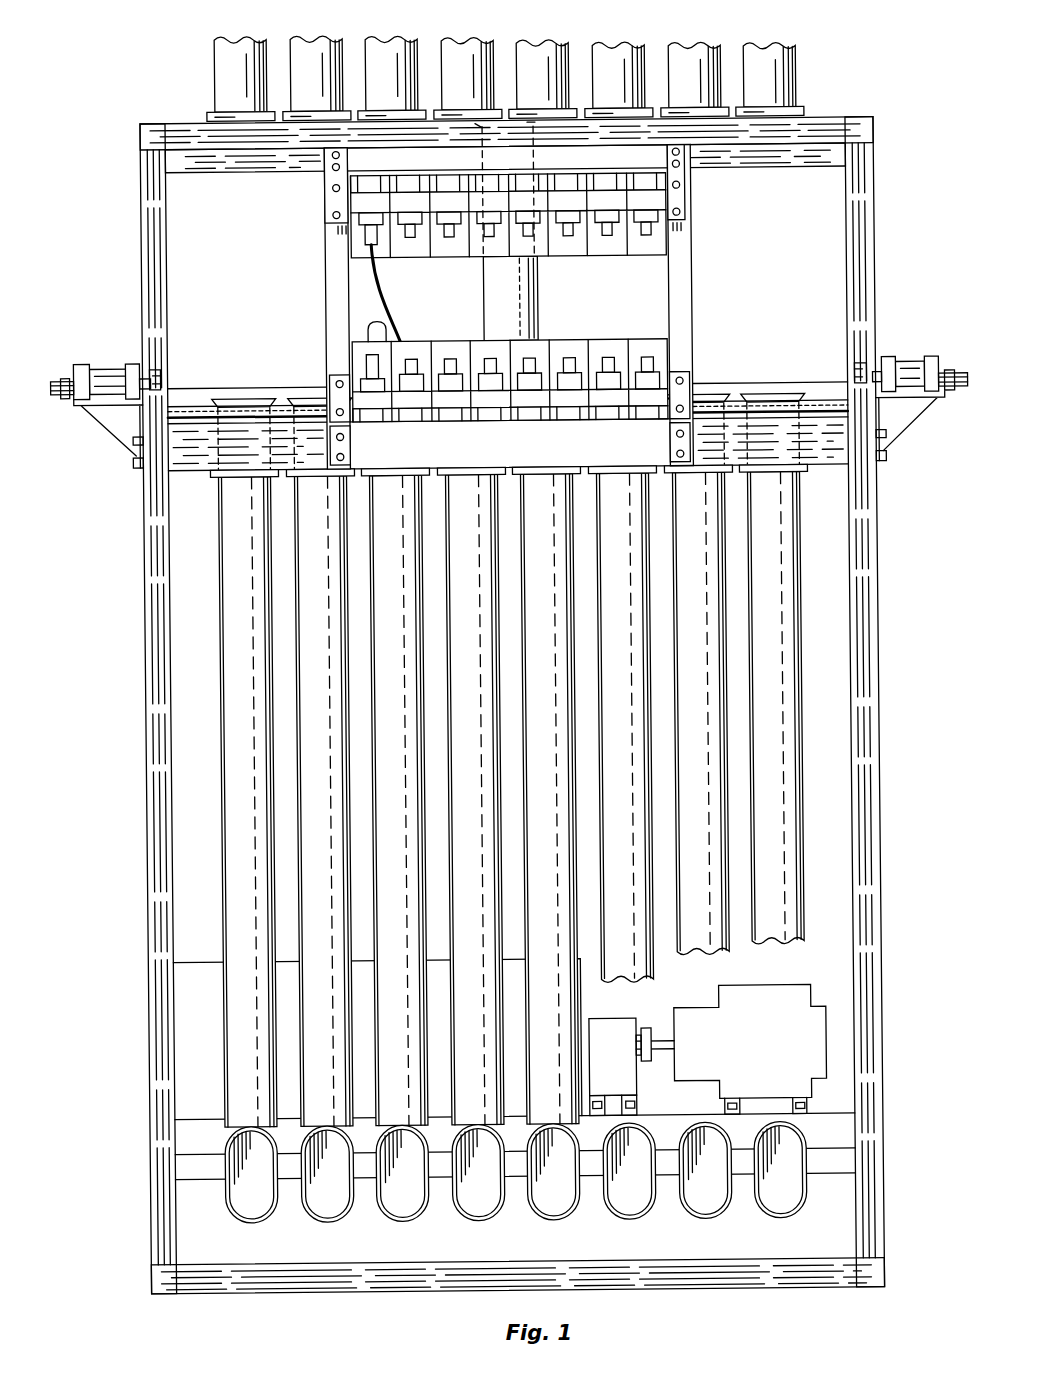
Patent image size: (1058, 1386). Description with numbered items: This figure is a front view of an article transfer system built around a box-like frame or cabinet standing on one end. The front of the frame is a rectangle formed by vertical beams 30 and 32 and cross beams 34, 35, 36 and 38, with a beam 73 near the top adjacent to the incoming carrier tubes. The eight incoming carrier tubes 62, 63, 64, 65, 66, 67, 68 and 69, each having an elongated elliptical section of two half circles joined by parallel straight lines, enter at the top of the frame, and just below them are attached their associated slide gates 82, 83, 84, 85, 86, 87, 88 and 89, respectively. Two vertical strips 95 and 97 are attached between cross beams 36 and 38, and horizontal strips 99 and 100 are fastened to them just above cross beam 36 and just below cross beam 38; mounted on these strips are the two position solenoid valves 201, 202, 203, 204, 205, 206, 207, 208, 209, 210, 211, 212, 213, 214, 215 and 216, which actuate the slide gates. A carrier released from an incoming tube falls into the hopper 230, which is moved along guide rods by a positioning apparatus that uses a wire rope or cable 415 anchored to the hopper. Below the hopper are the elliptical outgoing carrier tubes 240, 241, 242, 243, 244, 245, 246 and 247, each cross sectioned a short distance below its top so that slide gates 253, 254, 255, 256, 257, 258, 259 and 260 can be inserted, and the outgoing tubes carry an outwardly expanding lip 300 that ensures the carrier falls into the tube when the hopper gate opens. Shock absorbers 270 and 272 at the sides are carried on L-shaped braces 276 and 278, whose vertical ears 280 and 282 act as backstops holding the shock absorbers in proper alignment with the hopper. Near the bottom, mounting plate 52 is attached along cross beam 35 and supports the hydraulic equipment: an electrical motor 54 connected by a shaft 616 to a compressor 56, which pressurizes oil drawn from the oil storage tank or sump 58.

The vertical beam 30 is at (143, 850).
The vertical beam 32 is at (866, 835).
The cross beam 34 is at (553, 1276).
The cross beam 35 is at (830, 1166).
The cross beam 36 is at (817, 448).
The cross beam 38 is at (823, 160).
The mounting plate 52 is at (835, 1135).
The electrical motor 54 is at (596, 1040).
The compressor 56 is at (786, 1037).
The oil storage tank 58 is at (184, 1014).
The incoming carrier tube 62 is at (246, 51).
The incoming carrier tube 63 is at (313, 54).
The incoming carrier tube 64 is at (394, 53).
The incoming carrier tube 65 is at (459, 53).
The incoming carrier tube 66 is at (541, 62).
The incoming carrier tube 67 is at (621, 55).
The incoming carrier tube 68 is at (696, 56).
The incoming carrier tube 69 is at (776, 68).
The beam 73 is at (178, 133).
The slide gate 82 is at (242, 116).
The slide gate 83 is at (315, 118).
The slide gate 84 is at (403, 116).
The slide gate 85 is at (455, 121).
The slide gate 86 is at (528, 114).
The slide gate 87 is at (605, 118).
The slide gate 88 is at (693, 118).
The slide gate 89 is at (750, 121).
The vertical strip 95 is at (331, 260).
The vertical strip 97 is at (681, 283).
The strip 99 is at (332, 394).
The strip 100 is at (331, 204).
The two position solenoid valve 201 is at (371, 225).
The two position solenoid valve 202 is at (409, 242).
The two position solenoid valve 203 is at (495, 273).
The two position solenoid valve 204 is at (490, 219).
The two position solenoid valve 205 is at (525, 221).
The two position solenoid valve 206 is at (567, 243).
The two position solenoid valve 207 is at (606, 243).
The two position solenoid valve 208 is at (645, 243).
The two position solenoid valve 209 is at (362, 360).
The two position solenoid valve 210 is at (416, 380).
The two position solenoid valve 211 is at (451, 386).
The two position solenoid valve 212 is at (494, 384).
The two position solenoid valve 213 is at (533, 384).
The two position solenoid valve 214 is at (567, 384).
The two position solenoid valve 215 is at (612, 384).
The two position solenoid valve 216 is at (650, 382).
The hopper 230 is at (507, 324).
The outgoing carrier tube 240 is at (241, 634).
The outgoing carrier tube 241 is at (313, 645).
The outgoing carrier tube 242 is at (397, 662).
The outgoing carrier tube 243 is at (472, 687).
The outgoing carrier tube 244 is at (551, 722).
The outgoing carrier tube 245 is at (627, 672).
The outgoing carrier tube 246 is at (697, 642).
The outgoing carrier tube 247 is at (770, 630).
The slide gate 253 is at (241, 475).
The slide gate 254 is at (316, 475).
The slide gate 255 is at (390, 480).
The slide gate 256 is at (465, 481).
The slide gate 257 is at (570, 481).
The slide gate 258 is at (618, 481).
The slide gate 259 is at (697, 481).
The slide gate 260 is at (771, 480).
The shock absorber 270 is at (114, 377).
The shock absorber 272 is at (906, 381).
The L-shaped brace 276 is at (114, 421).
The L-shaped brace 278 is at (898, 420).
The vertical ear 280 is at (72, 372).
The vertical ear 282 is at (936, 405).
The outwardly expanding lip 300 is at (221, 399).
The wire rope or cable 415 is at (257, 389).
The shaft 616 is at (658, 1060).